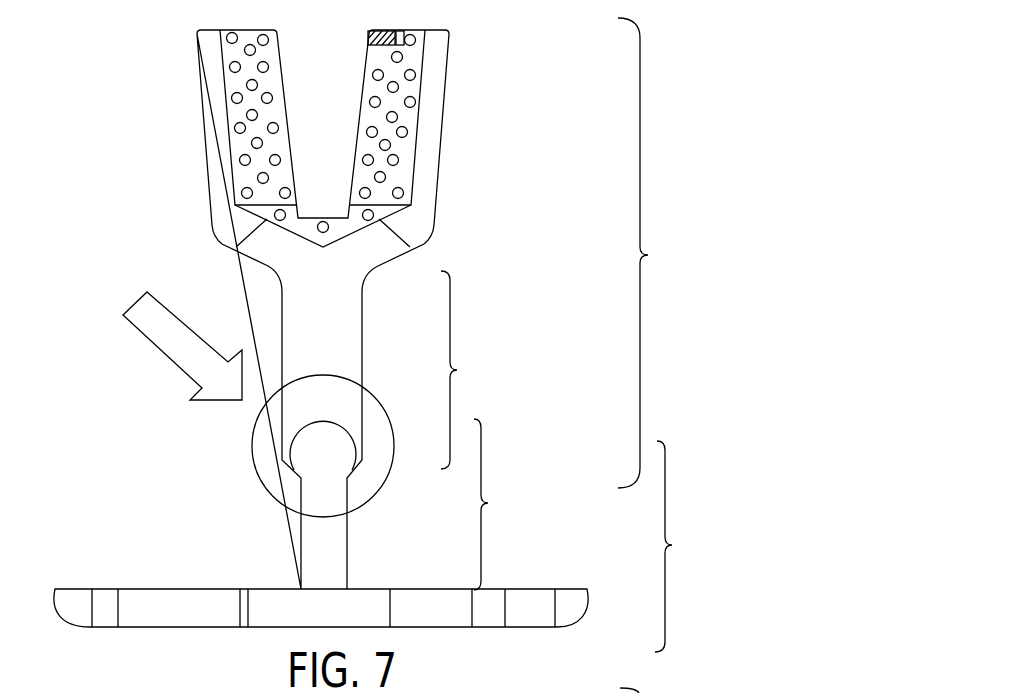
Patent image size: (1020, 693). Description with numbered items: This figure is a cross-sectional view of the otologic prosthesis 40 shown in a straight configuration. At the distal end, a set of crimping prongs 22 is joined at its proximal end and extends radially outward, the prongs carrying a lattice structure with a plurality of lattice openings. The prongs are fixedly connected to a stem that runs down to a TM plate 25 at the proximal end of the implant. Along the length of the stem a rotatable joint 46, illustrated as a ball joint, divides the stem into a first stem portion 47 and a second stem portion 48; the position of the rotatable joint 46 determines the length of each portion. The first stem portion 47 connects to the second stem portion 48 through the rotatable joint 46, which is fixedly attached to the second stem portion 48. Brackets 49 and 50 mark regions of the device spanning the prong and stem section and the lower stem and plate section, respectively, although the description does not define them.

The otologic prosthesis 40 is at (558, 120).
The set of crimping prongs 22 is at (407, 92).
The rotatable joint 46 is at (332, 453).
The first stem portion 47 is at (463, 370).
The second stem portion 48 is at (494, 504).
The upper section 49 is at (651, 253).
The base section 50 is at (676, 546).
The TM plate 25 is at (573, 605).